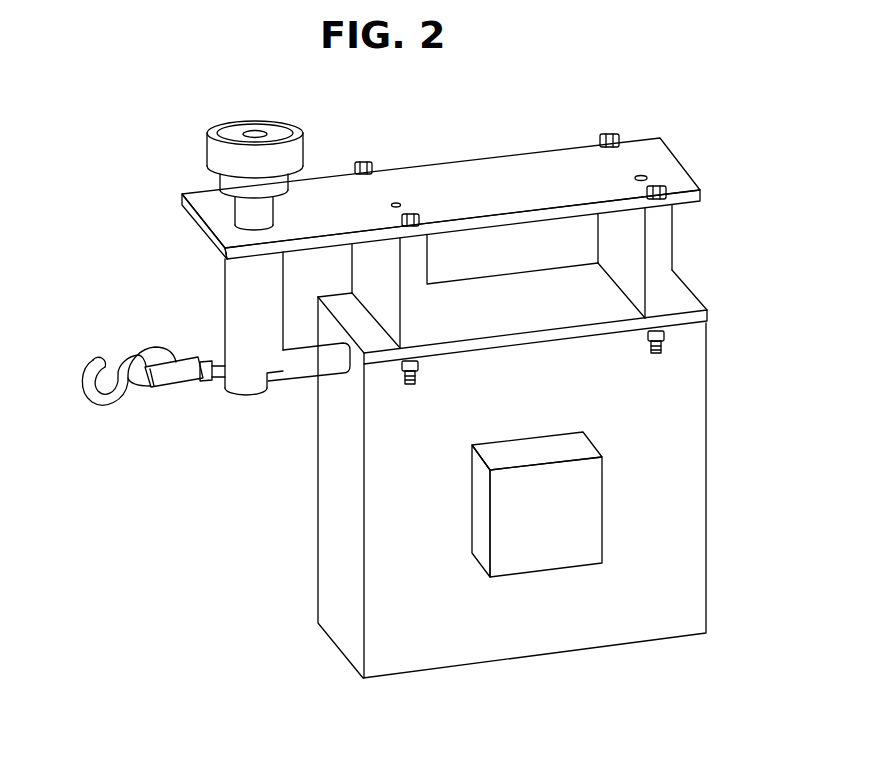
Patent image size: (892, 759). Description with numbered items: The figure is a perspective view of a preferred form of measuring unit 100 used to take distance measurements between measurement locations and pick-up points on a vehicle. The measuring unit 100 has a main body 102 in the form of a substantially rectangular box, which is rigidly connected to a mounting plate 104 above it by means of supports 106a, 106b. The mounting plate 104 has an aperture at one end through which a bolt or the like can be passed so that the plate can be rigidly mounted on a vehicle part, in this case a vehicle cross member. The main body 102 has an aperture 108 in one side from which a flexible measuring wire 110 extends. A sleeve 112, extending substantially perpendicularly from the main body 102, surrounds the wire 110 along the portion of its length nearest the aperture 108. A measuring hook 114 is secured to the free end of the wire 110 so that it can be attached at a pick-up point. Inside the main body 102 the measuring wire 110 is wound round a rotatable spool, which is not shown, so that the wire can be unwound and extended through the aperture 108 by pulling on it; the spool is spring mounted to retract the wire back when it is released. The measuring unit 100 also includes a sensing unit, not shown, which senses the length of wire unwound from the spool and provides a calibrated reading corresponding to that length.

The measuring unit 100 is at (727, 378).
The main body 102 is at (457, 627).
The mounting plate 104 is at (532, 173).
The support 106a is at (665, 275).
The support 106b is at (418, 257).
The aperture 108 is at (352, 360).
The measuring wire 110 is at (213, 366).
The sleeve 112 is at (300, 367).
The measuring hook 114 is at (132, 368).